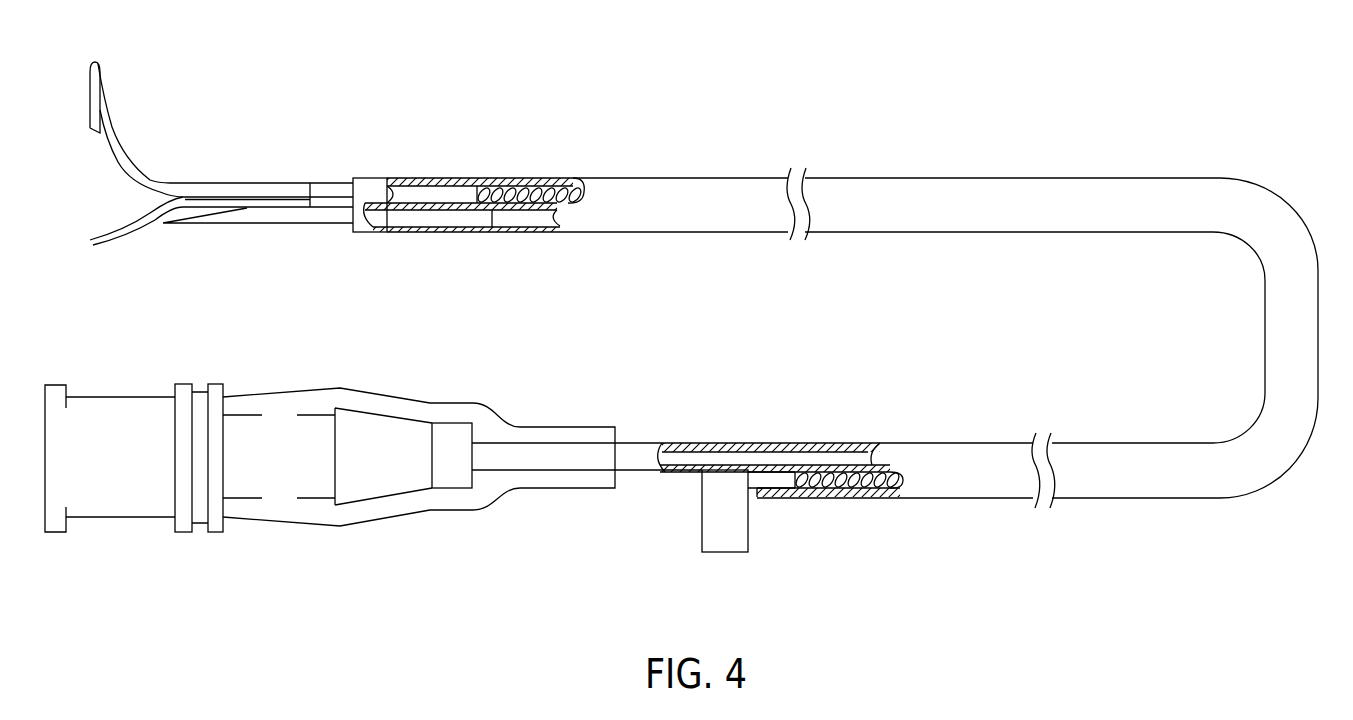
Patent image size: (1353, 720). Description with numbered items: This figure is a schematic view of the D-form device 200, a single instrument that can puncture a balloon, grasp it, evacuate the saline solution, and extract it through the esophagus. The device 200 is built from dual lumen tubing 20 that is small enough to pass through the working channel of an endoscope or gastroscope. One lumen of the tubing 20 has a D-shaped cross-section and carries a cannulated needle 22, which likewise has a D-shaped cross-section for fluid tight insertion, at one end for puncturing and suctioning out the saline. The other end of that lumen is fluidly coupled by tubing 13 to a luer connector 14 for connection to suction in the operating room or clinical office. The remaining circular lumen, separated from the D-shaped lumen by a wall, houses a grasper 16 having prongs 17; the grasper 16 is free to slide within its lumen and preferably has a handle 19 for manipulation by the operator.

The D-form device 200 is at (993, 90).
The tubing 13 is at (500, 490).
The luer connector 14 is at (185, 532).
The grasper 16 is at (240, 183).
The prongs 17 is at (93, 110).
The handle 19 is at (726, 553).
The dual lumen tubing 20 is at (717, 178).
The cannulated needle 22 is at (220, 224).